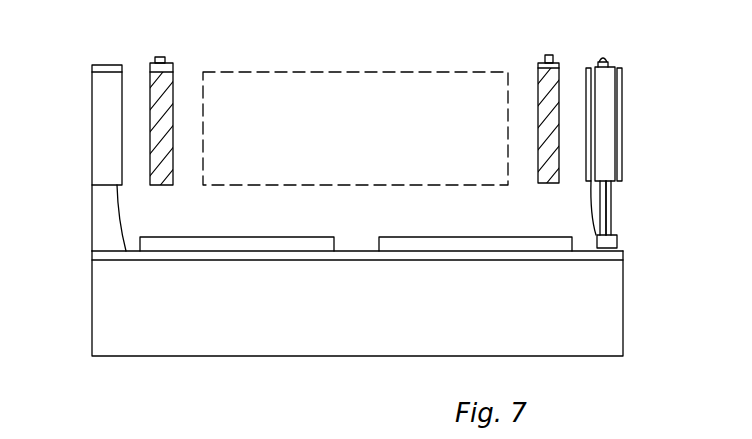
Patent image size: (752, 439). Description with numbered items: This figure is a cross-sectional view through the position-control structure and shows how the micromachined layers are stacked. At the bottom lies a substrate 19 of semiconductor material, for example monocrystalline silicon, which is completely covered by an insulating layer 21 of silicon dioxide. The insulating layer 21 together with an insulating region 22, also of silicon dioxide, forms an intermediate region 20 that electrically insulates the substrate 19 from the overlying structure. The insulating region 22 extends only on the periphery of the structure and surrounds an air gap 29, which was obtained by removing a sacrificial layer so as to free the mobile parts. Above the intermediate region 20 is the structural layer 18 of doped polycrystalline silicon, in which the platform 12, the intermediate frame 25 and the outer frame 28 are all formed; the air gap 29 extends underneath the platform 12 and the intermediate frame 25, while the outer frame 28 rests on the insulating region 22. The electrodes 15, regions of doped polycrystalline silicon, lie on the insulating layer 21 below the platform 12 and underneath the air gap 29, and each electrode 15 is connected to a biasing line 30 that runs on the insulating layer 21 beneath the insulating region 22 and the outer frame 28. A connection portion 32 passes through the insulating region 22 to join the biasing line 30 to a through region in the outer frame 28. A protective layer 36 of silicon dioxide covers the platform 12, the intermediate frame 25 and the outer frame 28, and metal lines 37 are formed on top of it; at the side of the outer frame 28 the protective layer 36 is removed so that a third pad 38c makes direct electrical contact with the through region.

The platform 12 is at (372, 126).
The electrodes 15 is at (215, 243).
The structural layer 18 is at (106, 145).
The substrate 19 is at (605, 320).
The intermediate region 20 is at (92, 244).
The insulating layer 21 is at (600, 252).
The insulating region 22 is at (112, 221).
The intermediate frame 25 is at (549, 93).
The outer frame 28 is at (115, 85).
The air gap 29 is at (358, 222).
The biasing line 30 is at (618, 241).
The connection portion 32 is at (603, 215).
The protective layer 36 is at (104, 70).
The metal lines 37 is at (162, 57).
The third pad 38c is at (600, 58).